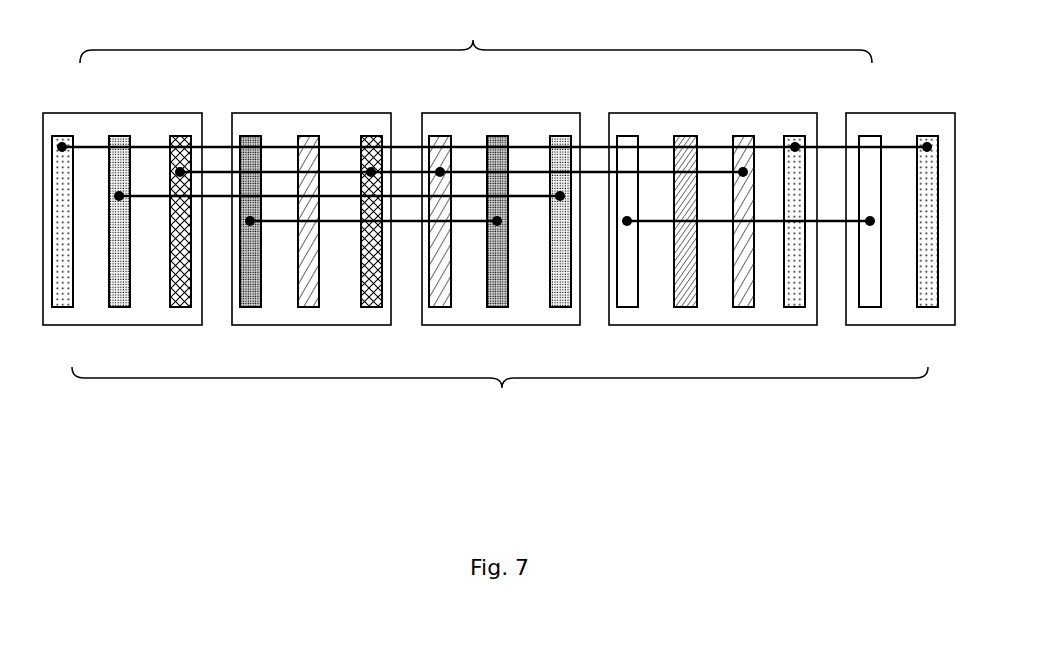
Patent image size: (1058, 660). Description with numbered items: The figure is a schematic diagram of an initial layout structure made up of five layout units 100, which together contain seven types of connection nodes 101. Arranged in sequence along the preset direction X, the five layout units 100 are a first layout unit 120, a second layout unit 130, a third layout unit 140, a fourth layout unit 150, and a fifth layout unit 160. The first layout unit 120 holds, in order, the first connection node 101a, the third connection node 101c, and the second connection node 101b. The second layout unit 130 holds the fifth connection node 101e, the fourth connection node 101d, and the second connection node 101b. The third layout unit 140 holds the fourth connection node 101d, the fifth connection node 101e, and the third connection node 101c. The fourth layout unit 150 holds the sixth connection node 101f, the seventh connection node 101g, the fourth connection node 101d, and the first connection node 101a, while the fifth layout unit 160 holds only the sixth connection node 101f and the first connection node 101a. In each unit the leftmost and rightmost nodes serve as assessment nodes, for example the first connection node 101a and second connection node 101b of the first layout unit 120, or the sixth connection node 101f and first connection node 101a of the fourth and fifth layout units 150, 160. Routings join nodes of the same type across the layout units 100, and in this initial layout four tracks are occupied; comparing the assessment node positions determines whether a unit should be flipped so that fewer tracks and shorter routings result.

The layout unit 100 is at (476, 41).
The connection node 101 is at (500, 393).
The first layout unit 120 is at (98, 113).
The second layout unit 130 is at (270, 113).
The third layout unit 140 is at (476, 113).
The fourth layout unit 150 is at (672, 113).
The fifth layout unit 160 is at (893, 113).
The first connection node 101a is at (58, 307).
The second connection node 101b is at (176, 307).
The third connection node 101c is at (115, 307).
The fourth connection node 101d is at (304, 307).
The fifth connection node 101e is at (246, 307).
The sixth connection node 101f is at (623, 307).
The seventh connection node 101g is at (681, 307).